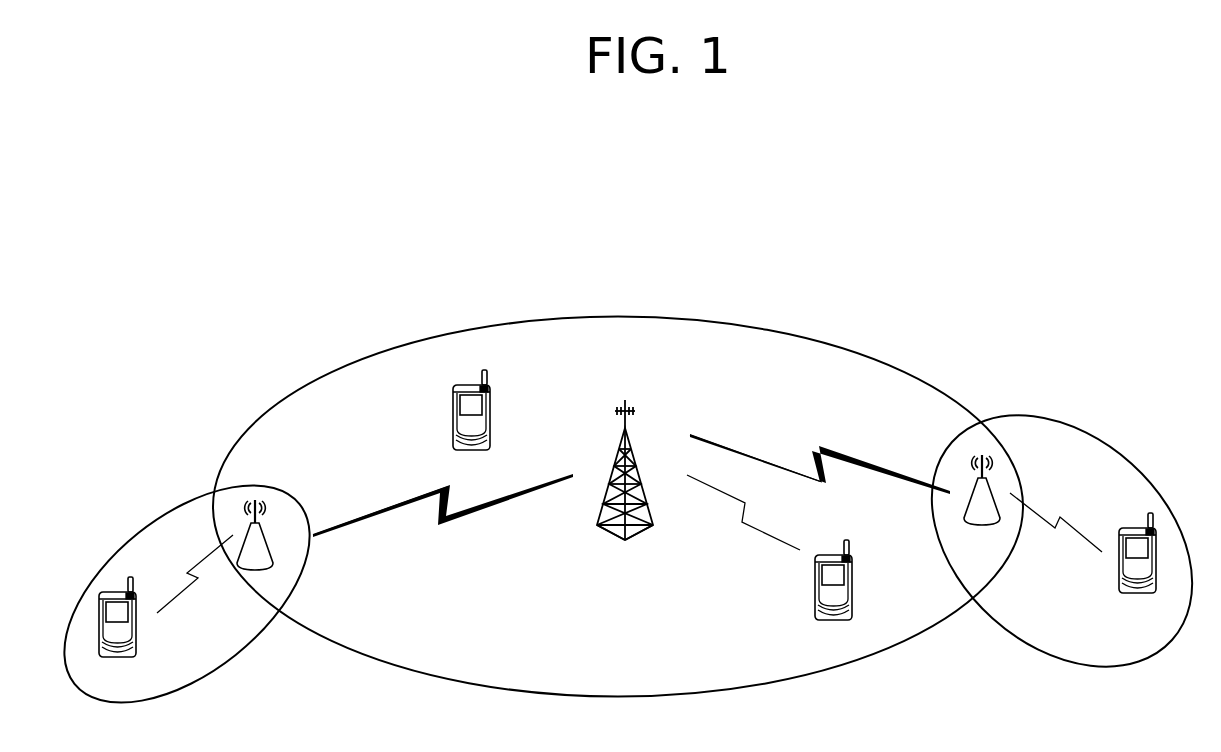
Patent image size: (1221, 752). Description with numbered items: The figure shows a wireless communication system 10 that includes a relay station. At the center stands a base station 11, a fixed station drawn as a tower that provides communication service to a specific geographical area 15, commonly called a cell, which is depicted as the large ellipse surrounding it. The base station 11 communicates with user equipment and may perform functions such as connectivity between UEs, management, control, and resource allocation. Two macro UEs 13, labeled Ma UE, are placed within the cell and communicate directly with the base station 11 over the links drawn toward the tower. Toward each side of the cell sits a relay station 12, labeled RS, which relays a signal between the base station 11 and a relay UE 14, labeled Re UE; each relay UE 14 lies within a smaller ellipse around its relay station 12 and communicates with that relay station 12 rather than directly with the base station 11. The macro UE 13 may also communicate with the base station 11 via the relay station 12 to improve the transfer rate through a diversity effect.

The wireless communication system 10 is at (803, 300).
The base station 11 is at (628, 440).
The relay station 12 is at (260, 527).
The macro UE 13 is at (453, 420).
The relay UE 14 is at (138, 632).
The geographical area 15 is at (592, 316).